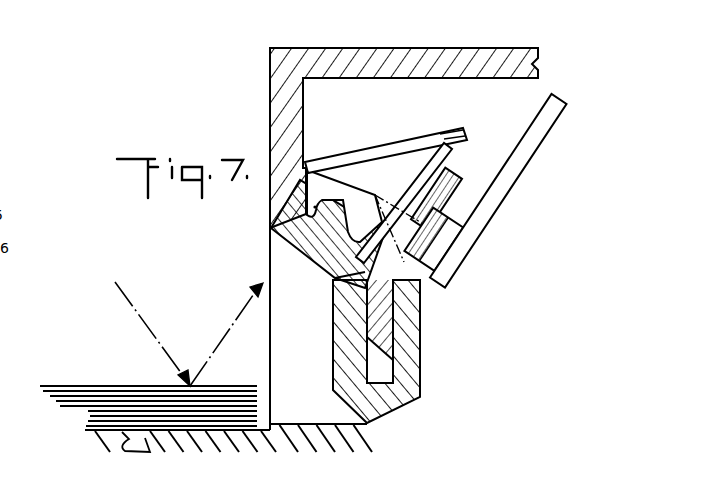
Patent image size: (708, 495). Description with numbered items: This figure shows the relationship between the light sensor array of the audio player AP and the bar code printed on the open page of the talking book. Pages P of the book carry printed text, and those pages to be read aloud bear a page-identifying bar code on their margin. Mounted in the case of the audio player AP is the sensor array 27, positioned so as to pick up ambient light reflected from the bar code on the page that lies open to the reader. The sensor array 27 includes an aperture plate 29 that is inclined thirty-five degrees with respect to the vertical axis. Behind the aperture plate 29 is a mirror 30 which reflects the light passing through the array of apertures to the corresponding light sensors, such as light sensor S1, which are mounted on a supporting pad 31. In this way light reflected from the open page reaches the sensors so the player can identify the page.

The audio player AP is at (438, 50).
The sensor array 27 is at (336, 104).
The aperture plate 29 is at (301, 255).
The mirror 30 is at (404, 146).
The supporting pad 31 is at (494, 193).
The light sensor S1 is at (463, 243).
The pages P is at (144, 384).